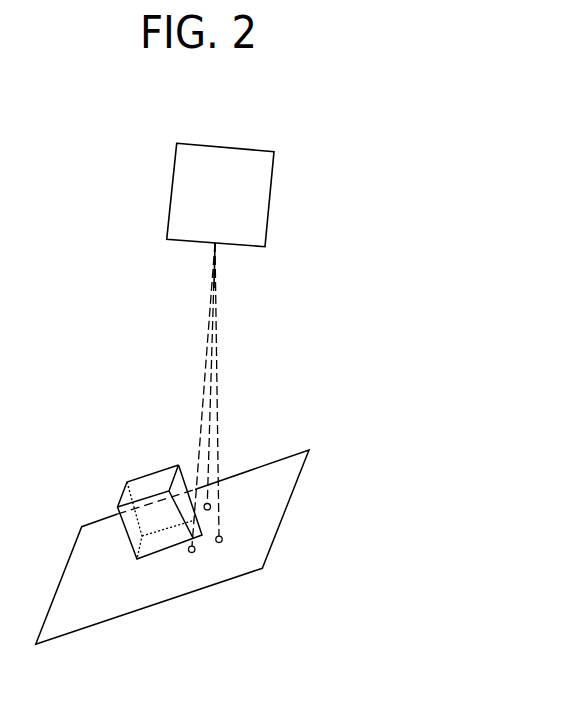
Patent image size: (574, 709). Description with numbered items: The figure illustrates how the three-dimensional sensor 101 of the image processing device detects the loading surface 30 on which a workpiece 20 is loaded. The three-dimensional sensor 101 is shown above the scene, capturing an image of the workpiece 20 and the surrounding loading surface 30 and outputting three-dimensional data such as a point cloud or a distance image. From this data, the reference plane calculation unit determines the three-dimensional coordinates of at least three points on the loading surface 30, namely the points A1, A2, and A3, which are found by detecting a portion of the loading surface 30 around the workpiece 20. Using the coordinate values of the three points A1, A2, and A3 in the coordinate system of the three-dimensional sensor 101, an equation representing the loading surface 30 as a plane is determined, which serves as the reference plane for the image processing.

The three-dimensional sensor 101 is at (227, 147).
The workpiece 20 is at (153, 474).
The loading surface 30 is at (289, 460).
The point on the loading surface A1 is at (201, 564).
The point on the loading surface A2 is at (235, 540).
The point on the loading surface A3 is at (210, 506).